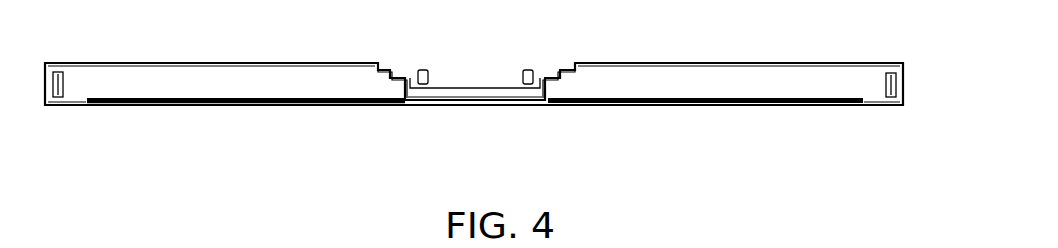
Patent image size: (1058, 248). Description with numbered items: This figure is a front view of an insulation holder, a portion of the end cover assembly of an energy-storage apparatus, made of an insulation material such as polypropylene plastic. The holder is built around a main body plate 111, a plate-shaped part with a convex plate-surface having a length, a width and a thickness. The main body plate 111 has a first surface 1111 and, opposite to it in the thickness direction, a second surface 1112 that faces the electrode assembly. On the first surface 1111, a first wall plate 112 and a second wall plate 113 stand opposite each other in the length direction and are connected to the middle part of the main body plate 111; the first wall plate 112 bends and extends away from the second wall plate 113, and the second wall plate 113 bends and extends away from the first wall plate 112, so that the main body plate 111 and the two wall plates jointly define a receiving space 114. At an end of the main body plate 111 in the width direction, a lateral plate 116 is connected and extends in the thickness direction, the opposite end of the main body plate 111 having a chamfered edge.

The main body plate 111 is at (98, 102).
The first surface 1111 is at (165, 98).
The second surface 1112 is at (215, 105).
The first wall plate 112 is at (405, 100).
The second wall plate 113 is at (548, 100).
The receiving space 114 is at (462, 88).
The lateral plate 116 is at (865, 78).